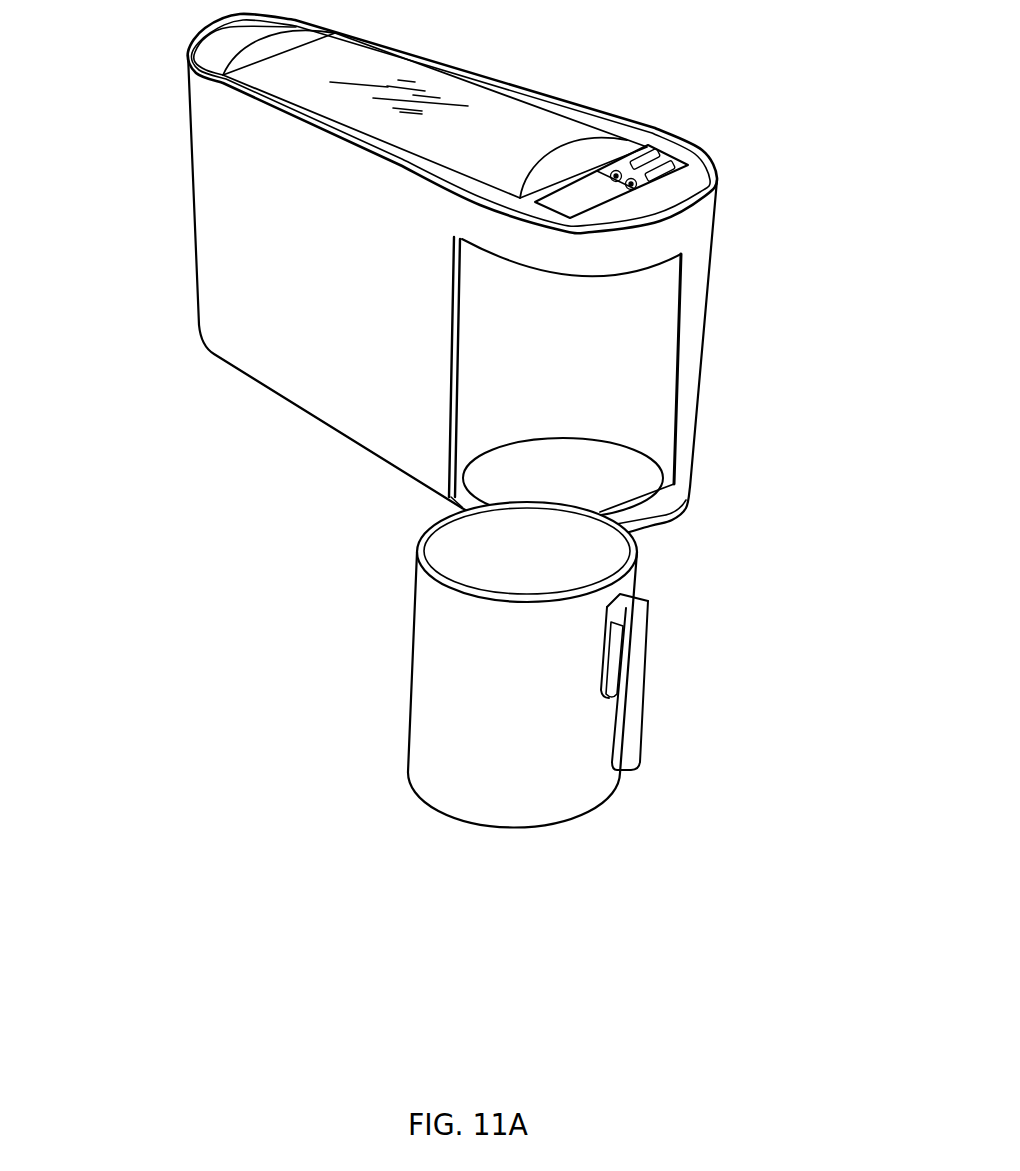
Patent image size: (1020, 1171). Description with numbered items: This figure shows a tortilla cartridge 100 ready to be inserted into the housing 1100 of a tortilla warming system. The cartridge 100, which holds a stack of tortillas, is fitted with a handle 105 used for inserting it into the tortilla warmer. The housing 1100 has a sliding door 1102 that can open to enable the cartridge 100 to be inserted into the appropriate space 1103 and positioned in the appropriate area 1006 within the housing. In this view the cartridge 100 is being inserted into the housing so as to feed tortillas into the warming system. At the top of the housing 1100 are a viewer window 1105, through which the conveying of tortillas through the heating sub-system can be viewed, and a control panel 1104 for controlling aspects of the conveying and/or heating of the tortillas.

The housing 1100 is at (176, 228).
The viewer window 1105 is at (528, 146).
The control panel 1104 is at (673, 164).
The space 1103 is at (648, 320).
The sliding door 1102 is at (451, 455).
The area 1006 is at (578, 470).
The tortilla cartridge 100 is at (373, 627).
The handle 105 is at (634, 669).